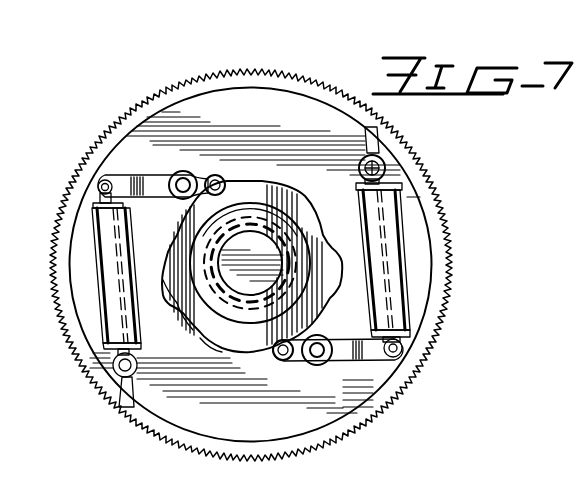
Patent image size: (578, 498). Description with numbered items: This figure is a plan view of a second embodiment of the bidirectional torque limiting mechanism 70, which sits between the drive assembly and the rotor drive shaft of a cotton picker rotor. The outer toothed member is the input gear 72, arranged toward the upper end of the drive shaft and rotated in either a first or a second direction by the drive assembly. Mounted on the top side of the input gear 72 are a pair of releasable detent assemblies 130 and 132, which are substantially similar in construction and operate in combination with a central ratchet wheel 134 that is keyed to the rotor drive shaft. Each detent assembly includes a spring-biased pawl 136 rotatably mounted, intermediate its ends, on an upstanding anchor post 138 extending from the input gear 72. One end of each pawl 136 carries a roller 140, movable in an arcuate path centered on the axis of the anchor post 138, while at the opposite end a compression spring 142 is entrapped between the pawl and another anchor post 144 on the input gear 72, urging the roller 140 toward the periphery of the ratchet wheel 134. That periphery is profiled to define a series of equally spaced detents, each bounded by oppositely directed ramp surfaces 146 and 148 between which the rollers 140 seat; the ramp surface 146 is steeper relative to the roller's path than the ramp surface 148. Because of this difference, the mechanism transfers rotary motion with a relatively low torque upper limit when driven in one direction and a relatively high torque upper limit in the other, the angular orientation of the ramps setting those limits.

The bidirectional torque limiting mechanism 70 is at (289, 182).
The input gear 72 is at (245, 76).
The releasable detent assembly 130 is at (120, 173).
The releasable detent assembly 132 is at (363, 364).
The ratchet wheel 134 is at (214, 355).
The spring-biased pawl 136 is at (340, 358).
The anchor post 138 is at (313, 364).
The roller 140 is at (273, 348).
The spring 142 is at (407, 248).
The anchor post 144 is at (420, 165).
The ramp surface 146 is at (170, 290).
The ramp surface 148 is at (192, 333).